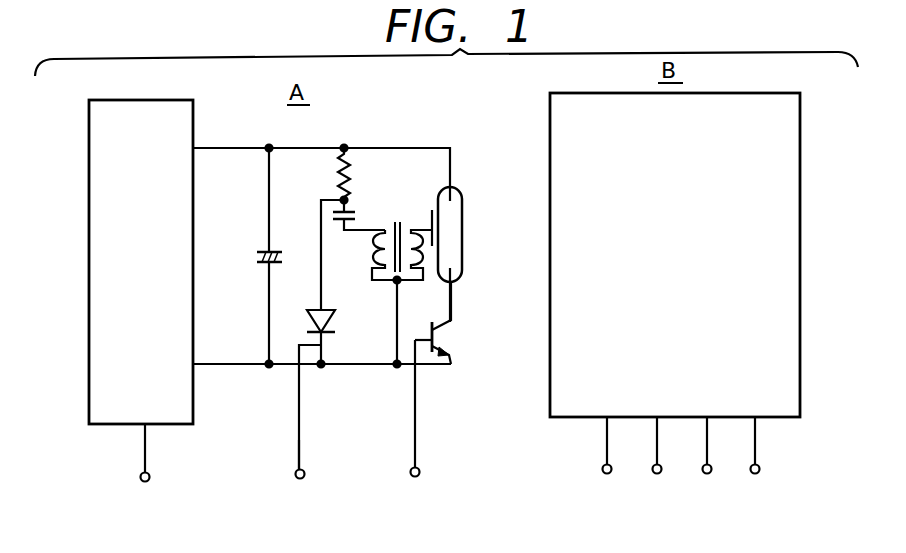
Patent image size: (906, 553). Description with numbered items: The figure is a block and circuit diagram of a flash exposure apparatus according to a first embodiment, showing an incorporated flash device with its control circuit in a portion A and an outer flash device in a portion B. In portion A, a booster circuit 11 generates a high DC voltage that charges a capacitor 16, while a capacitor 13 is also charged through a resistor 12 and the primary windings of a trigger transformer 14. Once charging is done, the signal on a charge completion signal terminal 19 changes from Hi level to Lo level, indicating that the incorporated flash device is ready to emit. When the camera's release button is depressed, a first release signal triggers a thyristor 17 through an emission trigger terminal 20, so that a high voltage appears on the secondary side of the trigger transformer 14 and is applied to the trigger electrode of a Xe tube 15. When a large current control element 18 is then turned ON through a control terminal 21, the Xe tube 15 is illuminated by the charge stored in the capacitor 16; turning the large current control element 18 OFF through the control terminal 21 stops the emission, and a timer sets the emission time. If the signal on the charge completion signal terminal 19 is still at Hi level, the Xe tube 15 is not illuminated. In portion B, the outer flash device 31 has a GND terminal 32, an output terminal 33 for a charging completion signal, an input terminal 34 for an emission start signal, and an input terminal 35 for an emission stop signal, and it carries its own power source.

The booster circuit 11 is at (193, 118).
The resistor 12 is at (358, 168).
The capacitor 13 is at (352, 214).
The trigger transformer 14 is at (398, 218).
The Xe tube 15 is at (462, 200).
The capacitor 16 is at (283, 250).
The thyristor 17 is at (335, 319).
The large current control element 18 is at (443, 331).
The charge completion signal terminal 19 is at (150, 479).
The emission trigger terminal 20 is at (305, 476).
The control terminal 21 is at (420, 473).
The outer flash device 31 is at (800, 120).
The GND terminal 32 is at (612, 471).
The output terminal 33 is at (662, 471).
The input terminal 34 is at (711, 472).
The input terminal 35 is at (759, 472).